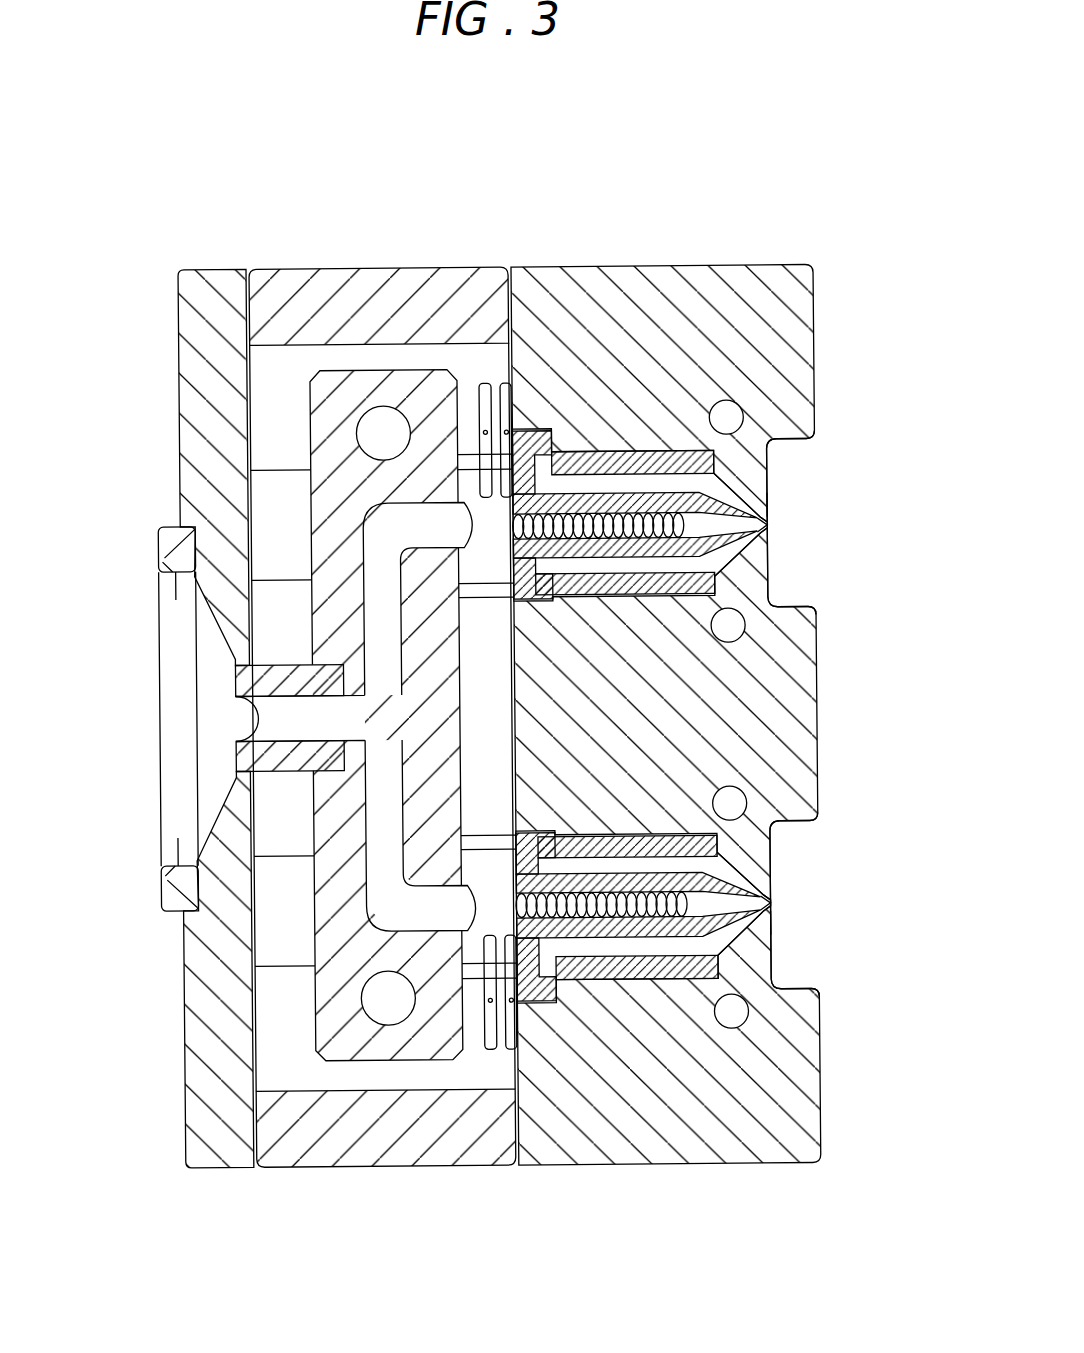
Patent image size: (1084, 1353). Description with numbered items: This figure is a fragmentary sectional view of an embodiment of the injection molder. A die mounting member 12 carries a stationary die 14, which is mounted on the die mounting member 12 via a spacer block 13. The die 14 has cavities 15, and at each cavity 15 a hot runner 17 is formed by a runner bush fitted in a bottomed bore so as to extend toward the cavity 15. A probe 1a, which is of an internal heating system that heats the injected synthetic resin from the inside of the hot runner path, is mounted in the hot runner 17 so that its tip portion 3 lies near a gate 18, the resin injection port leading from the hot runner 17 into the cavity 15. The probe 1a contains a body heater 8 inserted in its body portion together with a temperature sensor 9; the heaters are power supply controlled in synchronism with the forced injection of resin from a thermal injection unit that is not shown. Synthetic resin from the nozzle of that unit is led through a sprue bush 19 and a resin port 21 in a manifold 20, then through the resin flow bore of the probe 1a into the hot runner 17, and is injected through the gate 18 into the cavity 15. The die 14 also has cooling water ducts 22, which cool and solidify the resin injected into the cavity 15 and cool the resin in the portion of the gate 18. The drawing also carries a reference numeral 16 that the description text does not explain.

The probe 1a is at (548, 487).
The tip portion 3 is at (767, 508).
The body heater 8 is at (664, 495).
The temperature sensor 9 is at (692, 505).
The die mounting member 12 is at (212, 280).
The spacer block 13 is at (367, 282).
The stationary die 14 is at (777, 1108).
The cavity 15 is at (790, 567).
The heater sleeve 16 is at (622, 460).
The hot runner 17 is at (730, 483).
The gate 18 is at (767, 525).
The sprue bush 19 is at (250, 690).
The manifold 20 is at (313, 397).
The resin port 21 is at (367, 535).
The cooling water duct 22 is at (740, 406).